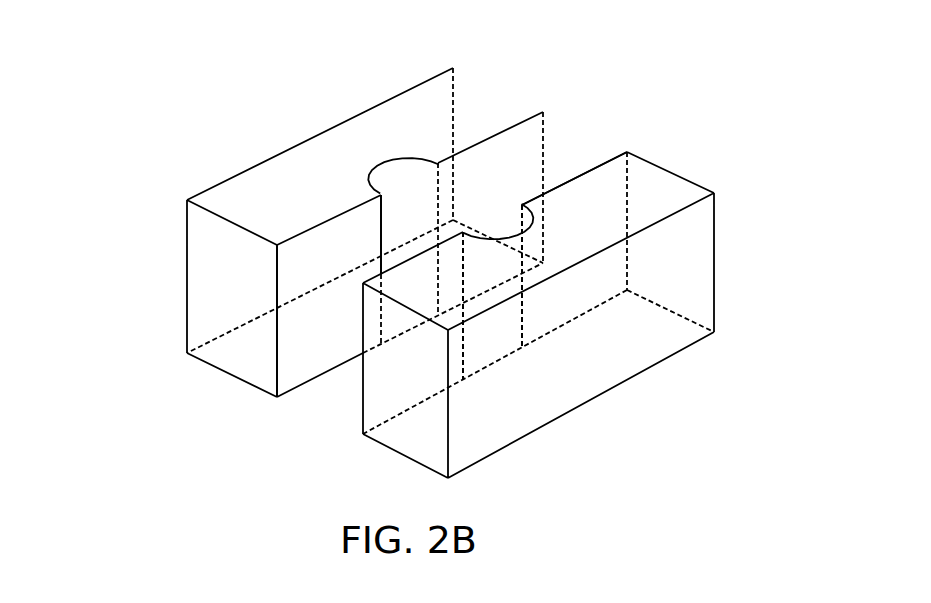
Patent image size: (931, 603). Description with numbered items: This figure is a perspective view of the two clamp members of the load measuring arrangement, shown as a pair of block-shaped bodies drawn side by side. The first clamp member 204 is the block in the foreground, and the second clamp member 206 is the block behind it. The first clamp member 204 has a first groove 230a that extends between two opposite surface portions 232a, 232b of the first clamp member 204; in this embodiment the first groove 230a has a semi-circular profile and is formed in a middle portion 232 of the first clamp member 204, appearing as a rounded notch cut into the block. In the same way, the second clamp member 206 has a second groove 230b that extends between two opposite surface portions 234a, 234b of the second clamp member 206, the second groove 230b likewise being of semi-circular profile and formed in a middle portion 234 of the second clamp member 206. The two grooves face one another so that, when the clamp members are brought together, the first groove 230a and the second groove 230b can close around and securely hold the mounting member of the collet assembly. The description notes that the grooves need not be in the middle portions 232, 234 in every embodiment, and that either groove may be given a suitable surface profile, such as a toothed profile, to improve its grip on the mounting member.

The first clamp member 204 is at (393, 402).
The second clamp member 206 is at (216, 256).
The first groove 230a is at (523, 202).
The second groove 230b is at (367, 162).
The middle portion 232 is at (493, 237).
The surface portion 232a is at (525, 200).
The surface portion 232b is at (363, 283).
The middle portion 234 is at (388, 165).
The surface portion 234a is at (543, 112).
The surface portion 234b is at (277, 245).